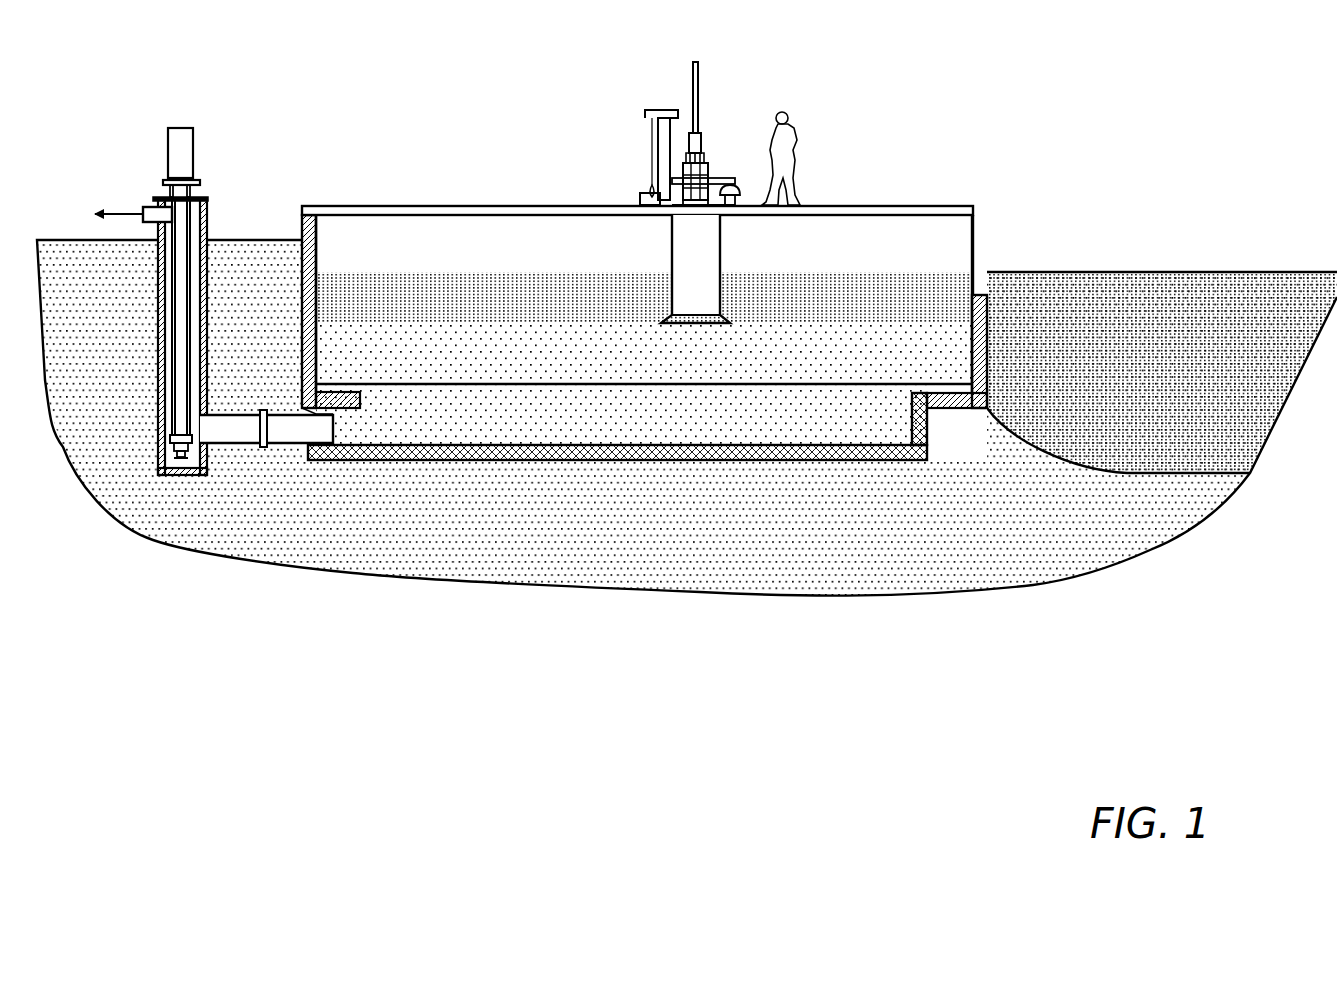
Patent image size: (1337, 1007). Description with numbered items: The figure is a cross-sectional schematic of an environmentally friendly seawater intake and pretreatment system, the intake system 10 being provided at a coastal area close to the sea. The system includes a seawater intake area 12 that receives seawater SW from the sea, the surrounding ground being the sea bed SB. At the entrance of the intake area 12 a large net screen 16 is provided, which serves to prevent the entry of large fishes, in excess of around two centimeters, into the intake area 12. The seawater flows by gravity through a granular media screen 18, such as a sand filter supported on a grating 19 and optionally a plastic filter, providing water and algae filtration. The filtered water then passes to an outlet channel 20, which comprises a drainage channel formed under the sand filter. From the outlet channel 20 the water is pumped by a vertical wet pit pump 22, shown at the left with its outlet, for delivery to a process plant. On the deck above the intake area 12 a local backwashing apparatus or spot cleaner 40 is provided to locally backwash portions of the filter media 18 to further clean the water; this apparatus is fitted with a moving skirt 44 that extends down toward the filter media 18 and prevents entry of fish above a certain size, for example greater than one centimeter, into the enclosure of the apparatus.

The intake system 10 is at (1027, 174).
The seawater intake area 12 is at (475, 282).
The net screen 16 is at (977, 287).
The granular media screen 18 is at (868, 360).
The grating 19 is at (772, 388).
The outlet channel 20 is at (447, 417).
The vertical wet pit pump 22 is at (180, 125).
The spot cleaner 40 is at (634, 155).
The moving skirt 44 is at (663, 322).
The seawater SW is at (1232, 297).
The sea bed SB is at (1033, 583).